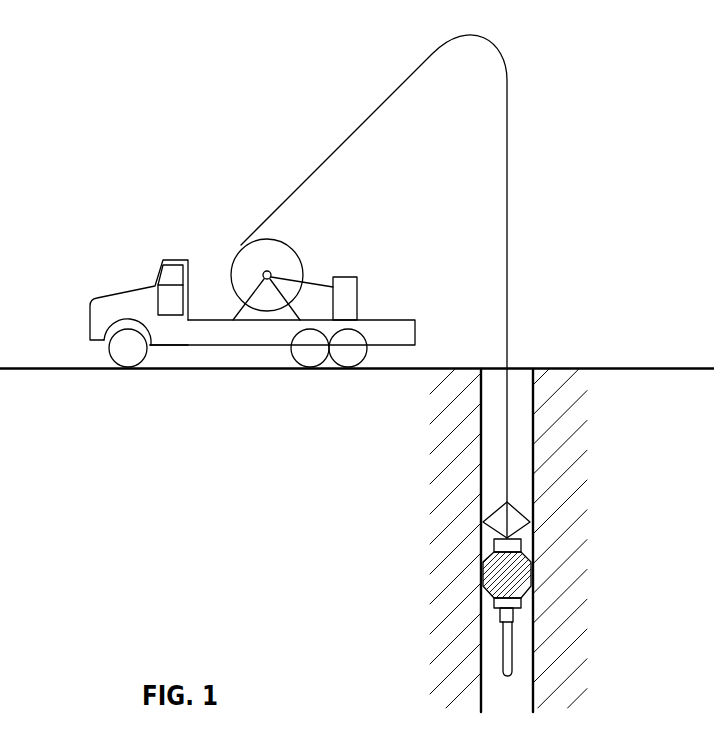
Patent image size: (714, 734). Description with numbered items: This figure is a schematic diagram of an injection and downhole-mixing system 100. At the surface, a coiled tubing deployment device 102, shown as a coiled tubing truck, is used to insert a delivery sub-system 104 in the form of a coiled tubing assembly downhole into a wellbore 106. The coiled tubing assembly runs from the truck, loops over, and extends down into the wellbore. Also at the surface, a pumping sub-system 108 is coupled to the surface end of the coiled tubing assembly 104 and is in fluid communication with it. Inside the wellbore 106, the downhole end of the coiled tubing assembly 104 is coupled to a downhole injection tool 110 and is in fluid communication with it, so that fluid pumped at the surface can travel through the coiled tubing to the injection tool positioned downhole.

The injection and downhole-mixing system 100 is at (140, 99).
The coiled tubing deployment device 102 is at (115, 290).
The delivery sub-system 104 is at (373, 110).
The wellbore 106 is at (509, 450).
The pumping sub-system 108 is at (345, 277).
The downhole injection tool 110 is at (418, 503).